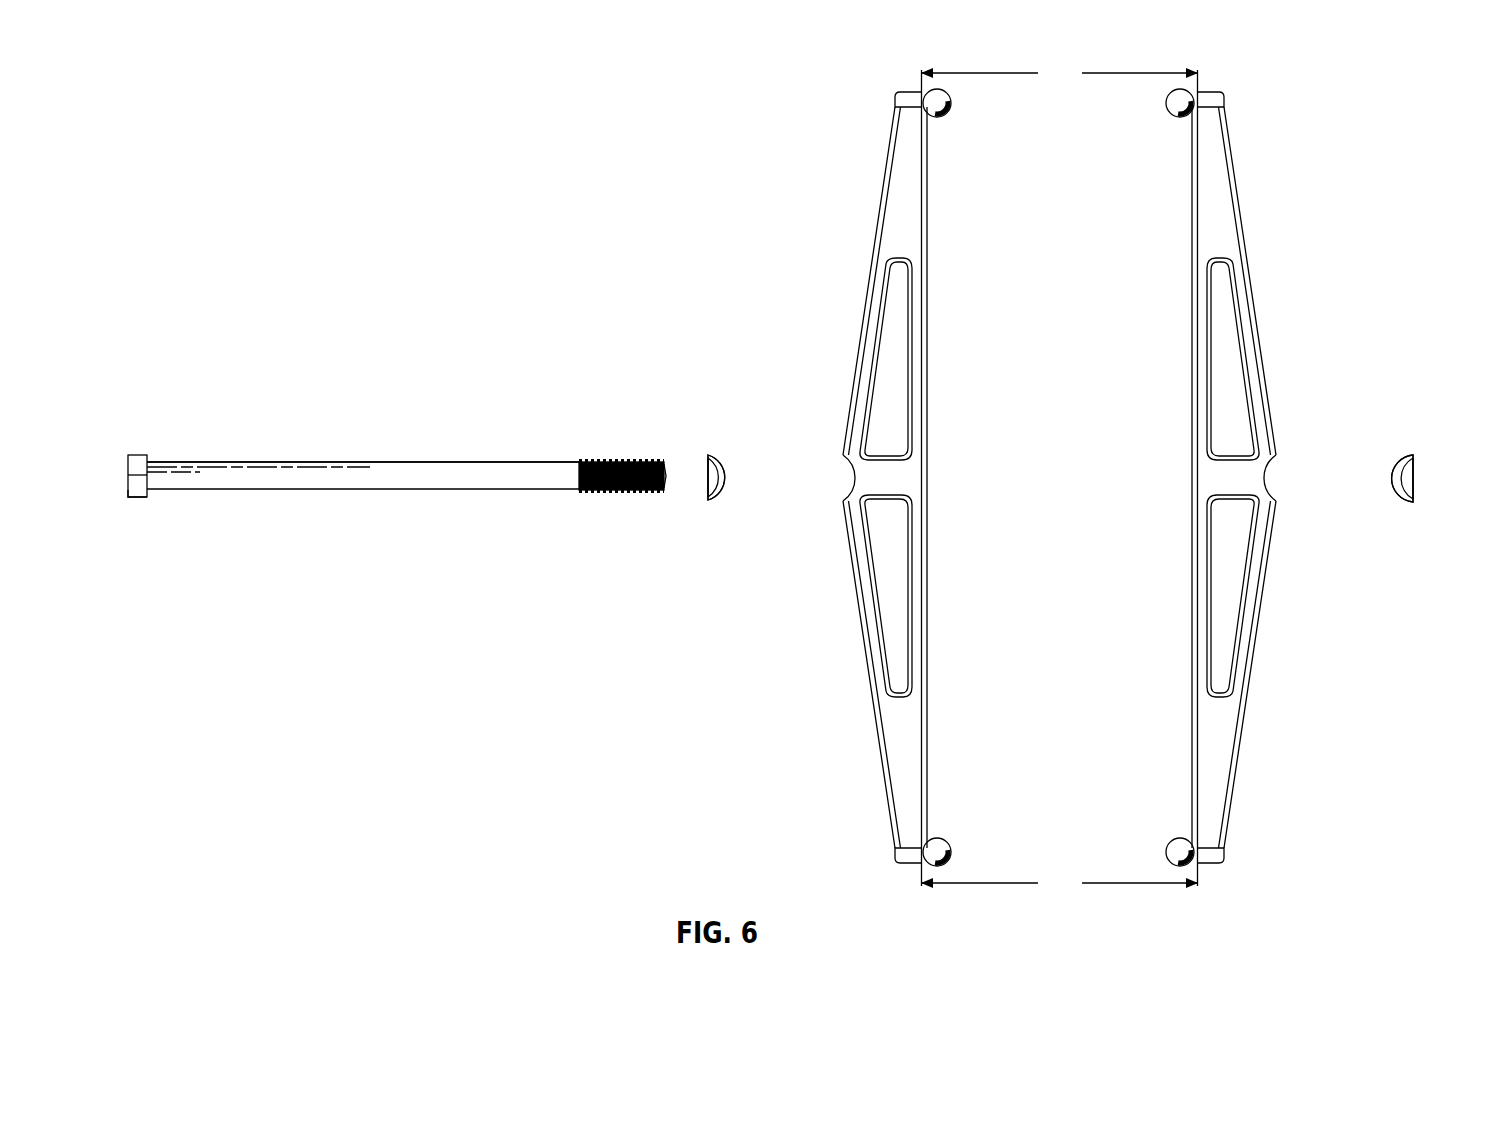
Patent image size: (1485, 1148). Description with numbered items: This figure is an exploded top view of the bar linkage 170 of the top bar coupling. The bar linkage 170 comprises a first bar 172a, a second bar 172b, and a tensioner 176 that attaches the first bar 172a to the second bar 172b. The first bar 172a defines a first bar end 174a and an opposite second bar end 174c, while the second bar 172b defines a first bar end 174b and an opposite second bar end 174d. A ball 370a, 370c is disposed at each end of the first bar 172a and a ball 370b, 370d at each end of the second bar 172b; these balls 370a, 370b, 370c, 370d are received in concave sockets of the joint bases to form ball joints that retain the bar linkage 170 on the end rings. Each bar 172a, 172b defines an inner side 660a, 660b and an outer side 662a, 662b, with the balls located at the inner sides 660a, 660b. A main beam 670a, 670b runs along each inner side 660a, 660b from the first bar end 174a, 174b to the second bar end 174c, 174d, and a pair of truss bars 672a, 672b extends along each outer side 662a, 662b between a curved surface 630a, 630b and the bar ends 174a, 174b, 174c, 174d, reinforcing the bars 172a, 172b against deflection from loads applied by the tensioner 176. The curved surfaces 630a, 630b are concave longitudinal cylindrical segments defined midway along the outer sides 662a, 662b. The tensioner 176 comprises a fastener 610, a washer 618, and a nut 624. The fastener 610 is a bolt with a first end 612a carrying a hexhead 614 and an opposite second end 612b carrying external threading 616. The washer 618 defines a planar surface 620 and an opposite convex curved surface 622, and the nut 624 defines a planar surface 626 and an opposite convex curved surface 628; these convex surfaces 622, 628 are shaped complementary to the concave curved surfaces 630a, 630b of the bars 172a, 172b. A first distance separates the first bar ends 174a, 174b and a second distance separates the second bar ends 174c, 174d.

The bar linkage 170 is at (510, 160).
The first bar 172a is at (895, 198).
The second bar 172b is at (1222, 188).
The first bar end 174a is at (910, 98).
The first bar end 174b is at (1208, 98).
The second bar end 174c is at (908, 862).
The second bar end 174d is at (1205, 862).
The tensioner 176 is at (378, 466).
The ball 370a is at (943, 112).
The ball 370b is at (1175, 112).
The ball 370c is at (943, 842).
The ball 370d is at (1177, 843).
The fastener 610 is at (305, 478).
The first end 612a is at (141, 498).
The second end 612b is at (668, 480).
The hexhead 614 is at (138, 458).
The external threading 616 is at (625, 462).
The washer 618 is at (720, 500).
The planar surface 620 is at (705, 476).
The curved surface 622 is at (733, 477).
The nut 624 is at (1402, 500).
The planar surface 626 is at (1416, 477).
The curved surface 628 is at (1385, 476).
The curved surface 630a is at (848, 482).
The curved surface 630b is at (1271, 482).
The inner side 660a is at (925, 250).
The inner side 660b is at (1192, 252).
The outer side 662a is at (873, 250).
The outer side 662b is at (1246, 247).
The main beam 670a is at (918, 300).
The main beam 670b is at (1200, 300).
The truss bars 672a is at (868, 368).
The truss bars 672b is at (1252, 362).